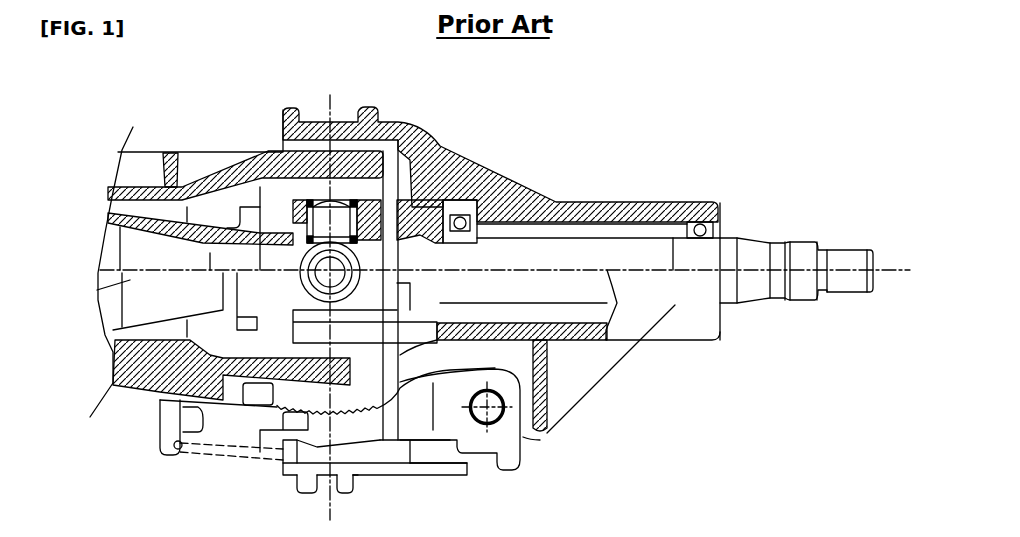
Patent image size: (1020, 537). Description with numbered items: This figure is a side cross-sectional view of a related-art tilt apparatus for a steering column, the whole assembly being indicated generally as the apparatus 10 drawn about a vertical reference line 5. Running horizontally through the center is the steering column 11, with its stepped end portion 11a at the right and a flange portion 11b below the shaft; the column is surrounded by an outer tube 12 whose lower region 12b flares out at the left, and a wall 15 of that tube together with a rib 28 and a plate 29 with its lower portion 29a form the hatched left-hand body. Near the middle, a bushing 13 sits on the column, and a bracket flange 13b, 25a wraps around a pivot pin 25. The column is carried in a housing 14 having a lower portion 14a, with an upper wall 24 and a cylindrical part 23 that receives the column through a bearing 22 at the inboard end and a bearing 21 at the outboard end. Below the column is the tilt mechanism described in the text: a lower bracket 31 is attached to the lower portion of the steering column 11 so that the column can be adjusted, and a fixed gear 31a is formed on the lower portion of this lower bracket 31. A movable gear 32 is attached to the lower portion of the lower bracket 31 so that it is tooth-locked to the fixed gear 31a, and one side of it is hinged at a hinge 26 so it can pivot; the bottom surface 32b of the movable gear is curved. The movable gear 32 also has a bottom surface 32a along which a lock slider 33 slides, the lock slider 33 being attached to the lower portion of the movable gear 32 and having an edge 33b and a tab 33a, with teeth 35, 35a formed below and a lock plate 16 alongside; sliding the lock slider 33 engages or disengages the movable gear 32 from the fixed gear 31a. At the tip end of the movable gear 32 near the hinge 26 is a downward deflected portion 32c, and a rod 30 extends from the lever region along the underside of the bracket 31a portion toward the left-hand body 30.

The steering apparatus 10 is at (419, 78).
The vertical axis 5 is at (370, 300).
The steering column 11 is at (578, 250).
The shaft end portion 11a is at (800, 257).
The shaft flange 11b is at (623, 273).
The column tube 12 is at (110, 222).
The column tube lower end 12b is at (97, 290).
The bushing 13 is at (330, 205).
The bushing flange 13b is at (335, 316).
The bracket flange 25a is at (403, 296).
The housing 14 is at (433, 168).
The housing lower portion 14a is at (523, 437).
The column tube wall 15 is at (226, 170).
The lock plate 16 is at (432, 481).
The bearing 21 is at (707, 207).
The bearing 22 is at (467, 207).
The housing cylinder 23 is at (543, 203).
The housing upper wall 24 is at (340, 118).
The pivot pin 25 is at (303, 263).
The hinge 26 is at (493, 397).
The rib 28 is at (144, 187).
The plate 29 is at (283, 152).
The plate lower portion 29a is at (231, 370).
The rod 30 is at (227, 457).
The lower bracket 31 is at (273, 385).
The fixed gear 31a is at (280, 413).
The movable gear 32 is at (402, 449).
The bottom surface of the movable gear 32a is at (290, 432).
The bottom surface of the movable gear 32b is at (283, 480).
The downward deflected portion 32c is at (507, 460).
The lock slider 33 is at (452, 479).
The lock plate tab 33a is at (370, 480).
The lock plate edge 33b is at (337, 450).
The tooth 35 is at (317, 480).
The tooth 35a is at (340, 483).